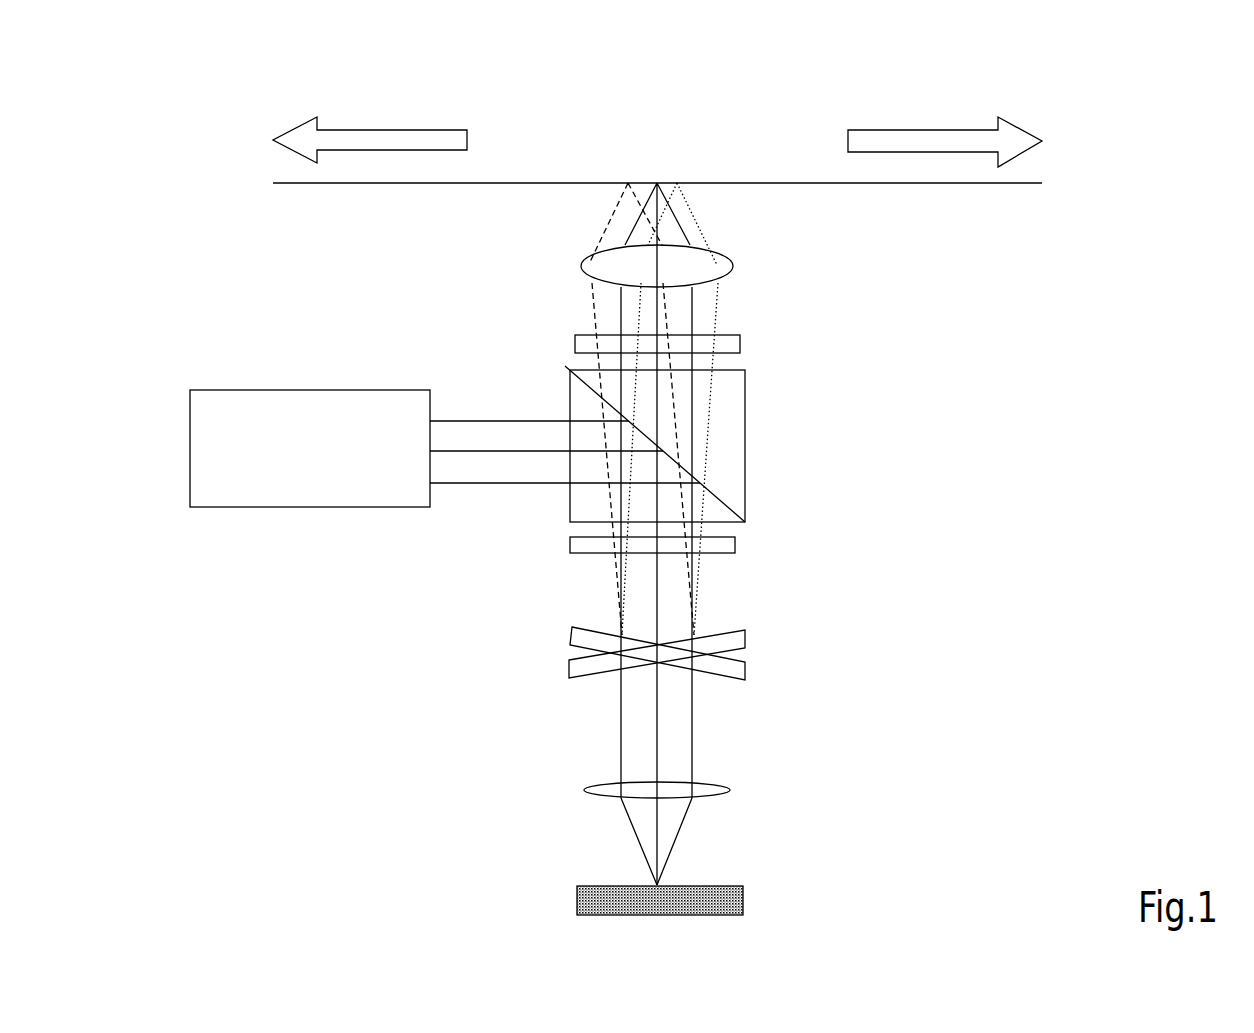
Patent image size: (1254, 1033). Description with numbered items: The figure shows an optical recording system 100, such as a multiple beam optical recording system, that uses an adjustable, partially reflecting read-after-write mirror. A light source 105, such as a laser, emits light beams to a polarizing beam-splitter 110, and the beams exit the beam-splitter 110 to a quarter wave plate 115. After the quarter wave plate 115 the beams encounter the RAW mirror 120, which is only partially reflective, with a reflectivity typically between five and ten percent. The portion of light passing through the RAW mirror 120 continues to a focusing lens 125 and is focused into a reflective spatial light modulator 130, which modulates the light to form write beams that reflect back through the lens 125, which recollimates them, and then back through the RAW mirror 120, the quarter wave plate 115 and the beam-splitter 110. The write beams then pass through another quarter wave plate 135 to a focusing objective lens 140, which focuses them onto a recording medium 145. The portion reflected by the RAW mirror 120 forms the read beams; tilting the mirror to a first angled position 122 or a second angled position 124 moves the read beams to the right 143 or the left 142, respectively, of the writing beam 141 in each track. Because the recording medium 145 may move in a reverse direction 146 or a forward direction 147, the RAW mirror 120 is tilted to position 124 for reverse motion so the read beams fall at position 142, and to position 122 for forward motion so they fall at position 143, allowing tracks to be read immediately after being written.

The optical recording system 100 is at (1131, 65).
The light source 105 is at (329, 459).
The polarizing beam-splitter 110 is at (578, 503).
The quarter wave plate 115 is at (735, 545).
The RAW mirror 120 is at (656, 686).
The first angled position 122 is at (573, 627).
The second angled position 124 is at (567, 668).
The focusing lens 125 is at (730, 790).
The reflective spatial light modulator 130 is at (743, 896).
The quarter wave plate 135 is at (738, 343).
The focusing objective lens 140 is at (733, 266).
The writing beam 141 is at (656, 182).
The left read beam position 142 is at (607, 192).
The right read beam position 143 is at (701, 192).
The recording medium 145 is at (273, 182).
The reverse direction 146 is at (370, 130).
The forward direction 147 is at (933, 130).